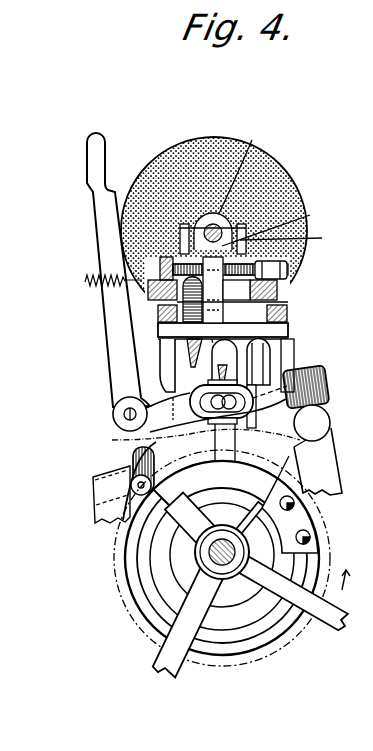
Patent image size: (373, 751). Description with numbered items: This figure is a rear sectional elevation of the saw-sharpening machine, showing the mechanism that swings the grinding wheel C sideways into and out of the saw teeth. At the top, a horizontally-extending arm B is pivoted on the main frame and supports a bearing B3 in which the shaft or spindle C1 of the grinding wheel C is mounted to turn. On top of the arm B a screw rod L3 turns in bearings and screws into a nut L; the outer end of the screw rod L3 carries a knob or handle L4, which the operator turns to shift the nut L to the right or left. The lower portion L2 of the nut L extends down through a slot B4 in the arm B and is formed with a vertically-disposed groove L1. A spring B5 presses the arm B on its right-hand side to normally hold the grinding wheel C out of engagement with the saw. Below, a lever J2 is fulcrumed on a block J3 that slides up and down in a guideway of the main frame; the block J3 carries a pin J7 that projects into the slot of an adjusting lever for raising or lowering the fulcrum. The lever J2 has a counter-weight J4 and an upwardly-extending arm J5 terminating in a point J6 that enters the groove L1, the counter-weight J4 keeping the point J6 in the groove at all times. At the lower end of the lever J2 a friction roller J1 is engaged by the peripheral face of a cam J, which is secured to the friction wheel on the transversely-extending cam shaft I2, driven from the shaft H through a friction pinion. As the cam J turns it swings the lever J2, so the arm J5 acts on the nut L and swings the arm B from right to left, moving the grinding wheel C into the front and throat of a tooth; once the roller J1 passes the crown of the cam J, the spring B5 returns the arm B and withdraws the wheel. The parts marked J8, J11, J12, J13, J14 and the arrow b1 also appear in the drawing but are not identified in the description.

The grinding wheel C is at (288, 184).
The shaft or spindle C1 is at (243, 172).
The nut L is at (213, 233).
The bearing B3 is at (274, 223).
The screw rod L3 is at (287, 235).
The knob or handle L4 is at (288, 270).
The horizontally-extending arm B is at (277, 297).
The slot B4 is at (236, 290).
The spring B5 is at (85, 282).
The groove L1 is at (223, 318).
The lower portion of nut L2 is at (203, 290).
The point J6 is at (158, 320).
The upwardly-extending arm J5 is at (191, 352).
The leg J8 is at (160, 380).
The post J11 is at (215, 375).
The block J3 is at (237, 378).
The counter-weight J4 is at (327, 378).
The pin J7 is at (253, 412).
The pivot J12 is at (118, 416).
The lever J13 is at (96, 216).
The curved arm J14 is at (208, 428).
The lever J2 is at (136, 457).
The friction roller J1 is at (143, 493).
The shaft H is at (330, 480).
The cam shaft I2 is at (224, 565).
The cam J is at (310, 540).
The direction arrow b1 is at (351, 581).